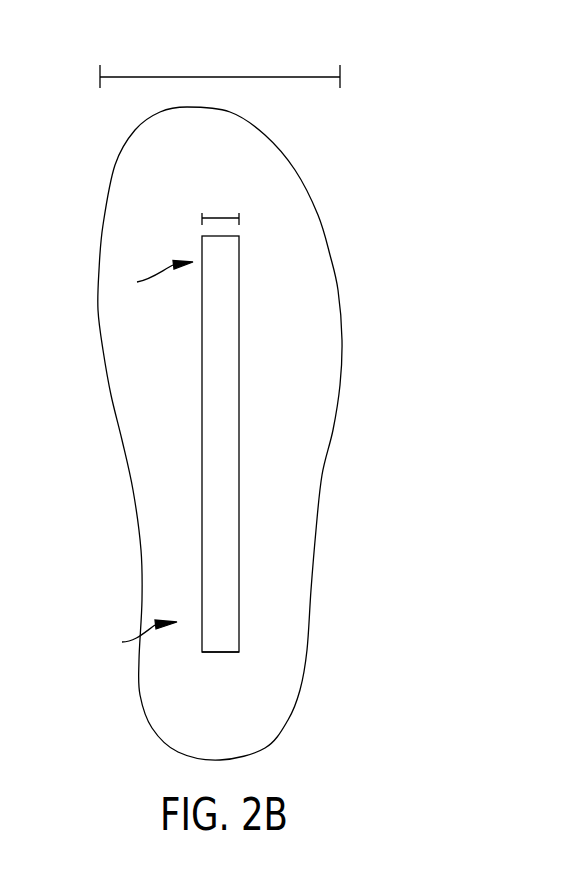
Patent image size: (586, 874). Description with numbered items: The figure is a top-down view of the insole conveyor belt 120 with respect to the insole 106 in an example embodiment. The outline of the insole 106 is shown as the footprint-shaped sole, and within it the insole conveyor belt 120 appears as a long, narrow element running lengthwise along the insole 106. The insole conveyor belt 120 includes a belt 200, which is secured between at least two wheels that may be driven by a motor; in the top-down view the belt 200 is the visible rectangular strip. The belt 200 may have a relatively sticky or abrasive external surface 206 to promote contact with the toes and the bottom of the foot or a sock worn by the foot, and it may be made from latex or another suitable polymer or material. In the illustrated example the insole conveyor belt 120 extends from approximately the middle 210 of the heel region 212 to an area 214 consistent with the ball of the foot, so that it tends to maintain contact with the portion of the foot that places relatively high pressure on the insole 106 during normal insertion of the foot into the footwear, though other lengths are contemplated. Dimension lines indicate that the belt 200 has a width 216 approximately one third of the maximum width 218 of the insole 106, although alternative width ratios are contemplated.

The insole 106 is at (307, 227).
The insole conveyor belt 120 is at (250, 444).
The belt 200 is at (250, 444).
The external surface 206 is at (223, 607).
The middle of the heel region 210 is at (223, 635).
The heel region 212 is at (133, 639).
The area consistent with the ball of the foot 214 is at (150, 280).
The width of the belt 216 is at (217, 218).
The maximum width of the insole 218 is at (218, 77).